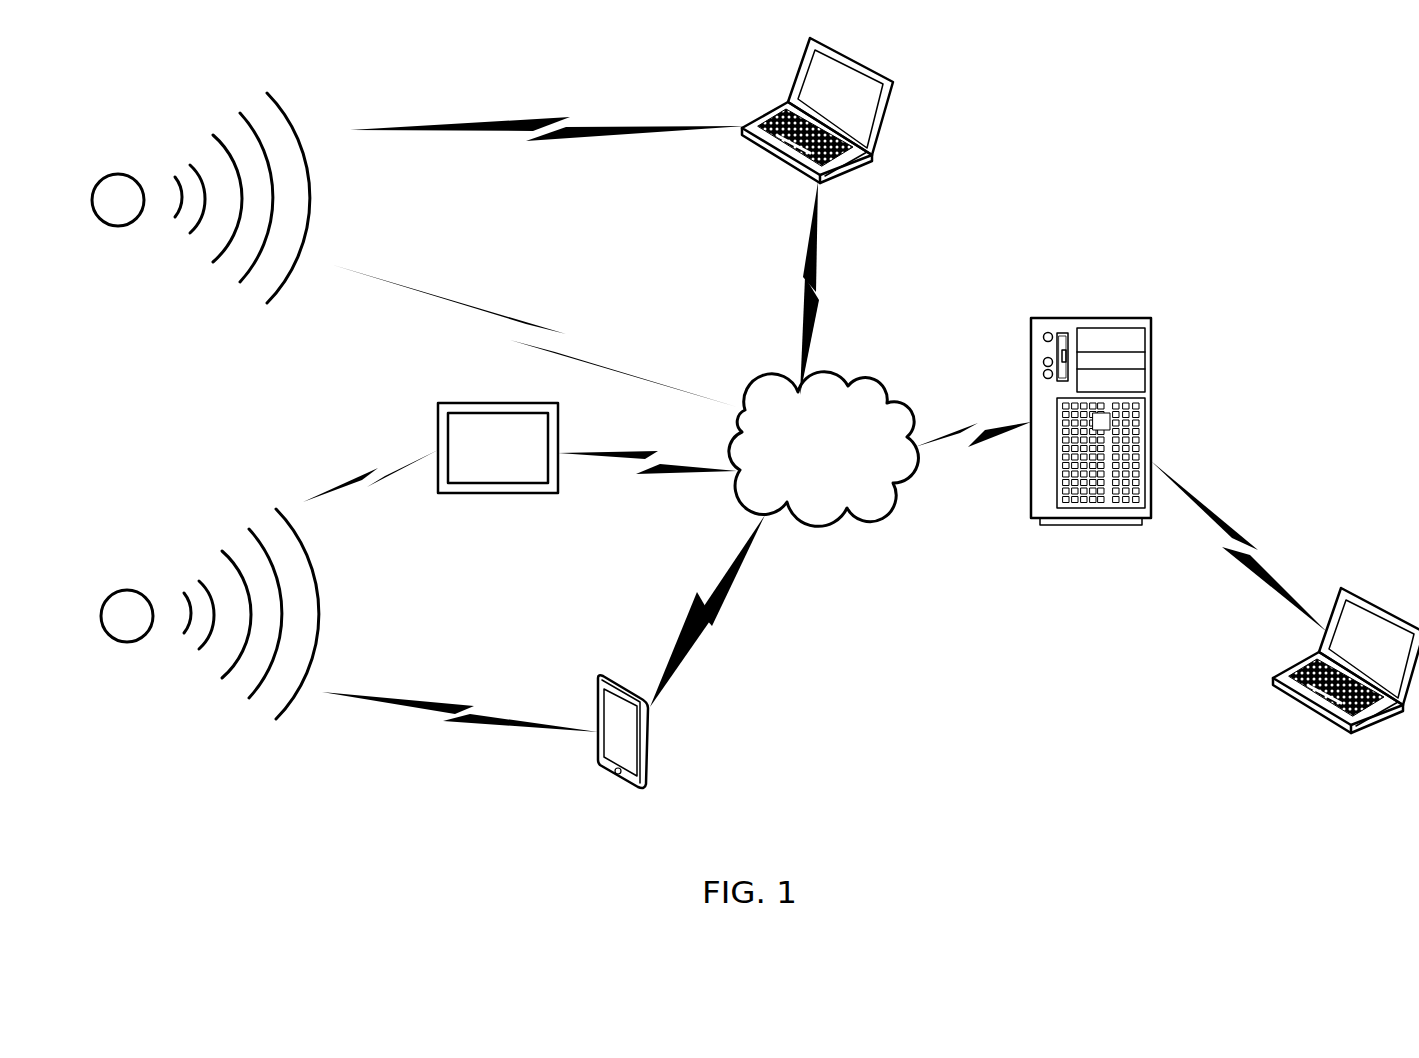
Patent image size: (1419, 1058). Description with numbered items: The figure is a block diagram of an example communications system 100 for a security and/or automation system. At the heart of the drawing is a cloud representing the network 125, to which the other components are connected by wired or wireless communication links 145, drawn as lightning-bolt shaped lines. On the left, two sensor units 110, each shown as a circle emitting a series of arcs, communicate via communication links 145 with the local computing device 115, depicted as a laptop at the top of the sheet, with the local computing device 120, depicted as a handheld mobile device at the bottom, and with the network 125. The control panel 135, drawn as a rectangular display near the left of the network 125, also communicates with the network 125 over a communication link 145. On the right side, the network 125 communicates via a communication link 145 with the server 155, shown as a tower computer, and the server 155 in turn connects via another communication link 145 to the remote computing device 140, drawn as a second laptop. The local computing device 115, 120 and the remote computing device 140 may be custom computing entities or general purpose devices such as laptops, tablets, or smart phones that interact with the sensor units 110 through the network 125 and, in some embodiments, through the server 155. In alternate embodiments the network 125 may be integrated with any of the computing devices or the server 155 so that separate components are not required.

The communications system 100 is at (104, 866).
The sensor units 110 is at (120, 227).
The local computing device 115 is at (790, 173).
The local computing device 120 is at (612, 777).
The network 125 is at (847, 382).
The control panel 135 is at (500, 494).
The remote computing device 140 is at (1310, 723).
The communication links 145 is at (476, 122).
The server 155 is at (1115, 318).